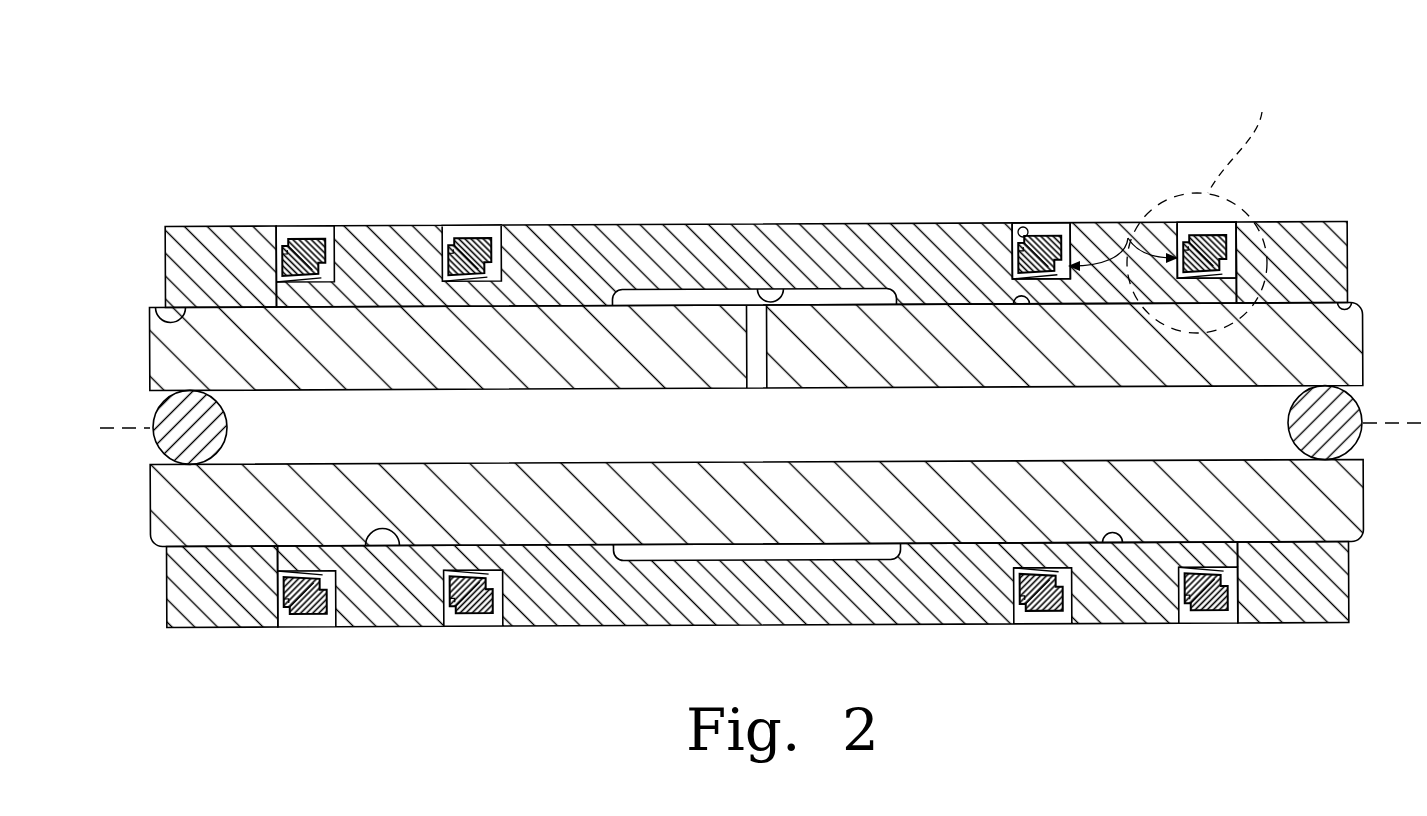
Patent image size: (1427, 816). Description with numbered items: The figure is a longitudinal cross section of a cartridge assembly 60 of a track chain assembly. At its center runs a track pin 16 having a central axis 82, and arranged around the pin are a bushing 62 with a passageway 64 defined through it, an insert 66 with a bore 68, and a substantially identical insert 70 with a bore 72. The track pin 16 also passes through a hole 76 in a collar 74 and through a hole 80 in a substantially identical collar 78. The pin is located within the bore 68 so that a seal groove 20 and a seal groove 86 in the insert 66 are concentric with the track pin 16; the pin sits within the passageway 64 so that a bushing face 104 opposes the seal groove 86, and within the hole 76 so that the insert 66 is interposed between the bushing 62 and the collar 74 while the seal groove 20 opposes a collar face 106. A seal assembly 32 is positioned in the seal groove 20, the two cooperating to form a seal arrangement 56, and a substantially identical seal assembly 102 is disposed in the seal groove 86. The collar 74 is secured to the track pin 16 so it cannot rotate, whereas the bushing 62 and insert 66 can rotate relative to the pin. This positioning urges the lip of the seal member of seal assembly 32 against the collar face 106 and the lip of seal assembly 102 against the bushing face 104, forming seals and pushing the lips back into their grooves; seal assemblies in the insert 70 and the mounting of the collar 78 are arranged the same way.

The track pin 16 is at (160, 358).
The seal groove 20 is at (1228, 224).
The seal assembly 32 is at (1145, 224).
The seal arrangement 56 is at (1200, 138).
The cartridge assembly 60 is at (538, 183).
The bushing 62 is at (660, 224).
The passageway 64 is at (782, 288).
The insert 66 is at (1078, 224).
The bore 68 is at (1108, 555).
The insert 70 is at (388, 224).
The bore 72 is at (384, 561).
The collar 74 is at (1340, 224).
The hole 76 is at (1350, 306).
The collar 78 is at (198, 224).
The hole 80 is at (167, 300).
The central axis 82 is at (1392, 425).
The seal groove 86 is at (1020, 224).
The seal assembly 102 is at (1128, 238).
The bushing face 104 is at (1022, 305).
The collar face 106 is at (1272, 224).